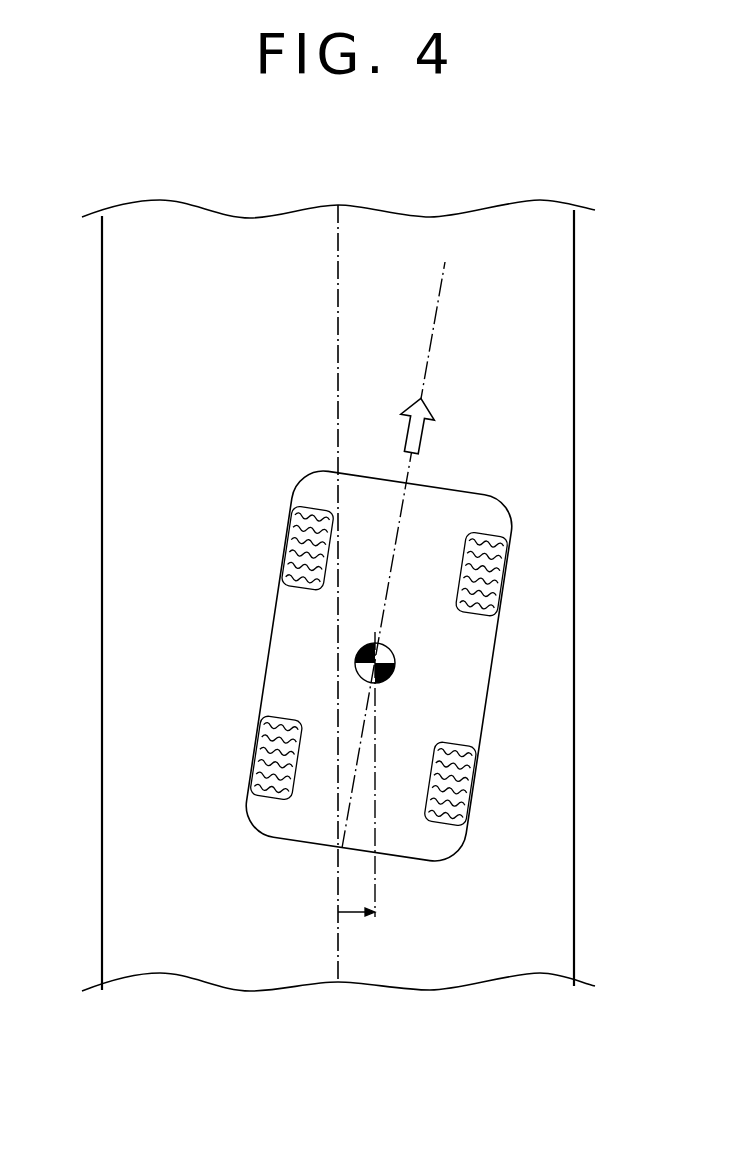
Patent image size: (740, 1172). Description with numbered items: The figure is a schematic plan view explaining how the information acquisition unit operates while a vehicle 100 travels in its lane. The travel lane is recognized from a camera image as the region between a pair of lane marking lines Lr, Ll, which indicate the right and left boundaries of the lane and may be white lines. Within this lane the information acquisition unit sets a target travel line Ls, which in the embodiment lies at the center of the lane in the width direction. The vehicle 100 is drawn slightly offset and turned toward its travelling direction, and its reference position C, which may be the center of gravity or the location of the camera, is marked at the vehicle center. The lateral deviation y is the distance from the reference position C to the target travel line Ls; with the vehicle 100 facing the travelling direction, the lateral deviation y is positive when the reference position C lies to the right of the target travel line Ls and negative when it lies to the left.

The vehicle 100 is at (272, 638).
The reference position C is at (393, 657).
The lane marking line Ll is at (102, 427).
The lane marking line Lr is at (575, 425).
The target travel line Ls is at (338, 329).
The lateral deviation y is at (353, 914).